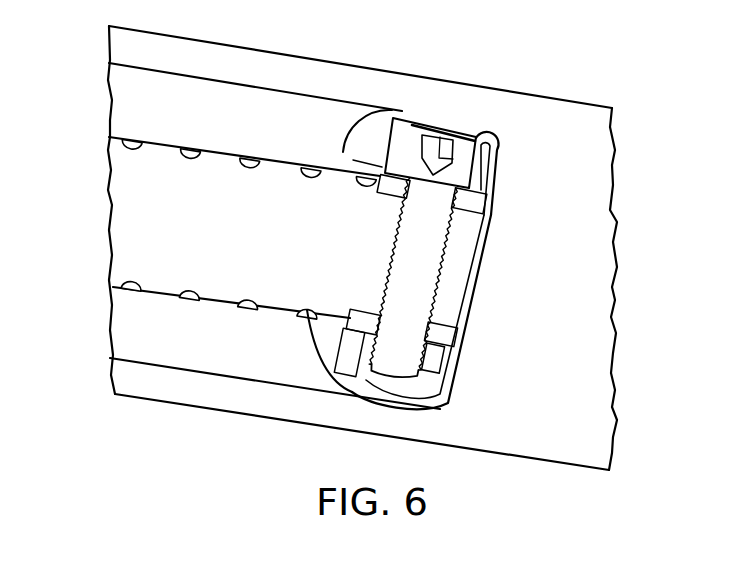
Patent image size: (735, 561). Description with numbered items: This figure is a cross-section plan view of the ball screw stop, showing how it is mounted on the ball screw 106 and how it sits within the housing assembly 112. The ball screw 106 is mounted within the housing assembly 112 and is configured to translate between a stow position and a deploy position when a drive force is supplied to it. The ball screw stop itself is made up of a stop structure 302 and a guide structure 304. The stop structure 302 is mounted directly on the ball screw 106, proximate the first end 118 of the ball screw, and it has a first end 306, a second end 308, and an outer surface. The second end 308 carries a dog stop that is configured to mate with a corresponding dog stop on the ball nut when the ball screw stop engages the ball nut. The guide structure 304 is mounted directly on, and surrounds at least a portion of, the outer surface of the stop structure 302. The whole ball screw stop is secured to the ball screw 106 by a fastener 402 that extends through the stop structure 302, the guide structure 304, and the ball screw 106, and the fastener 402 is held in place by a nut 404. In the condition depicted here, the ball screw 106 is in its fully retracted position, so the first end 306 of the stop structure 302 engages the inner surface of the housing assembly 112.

The ball screw 106 is at (220, 160).
The housing assembly 112 is at (415, 248).
The first end 118 is at (468, 293).
The stop structure 302 is at (350, 327).
The guide structure 304 is at (403, 128).
The first end 306 is at (492, 190).
The second end 308 is at (349, 156).
The fastener 402 is at (477, 142).
The nut 404 is at (423, 363).